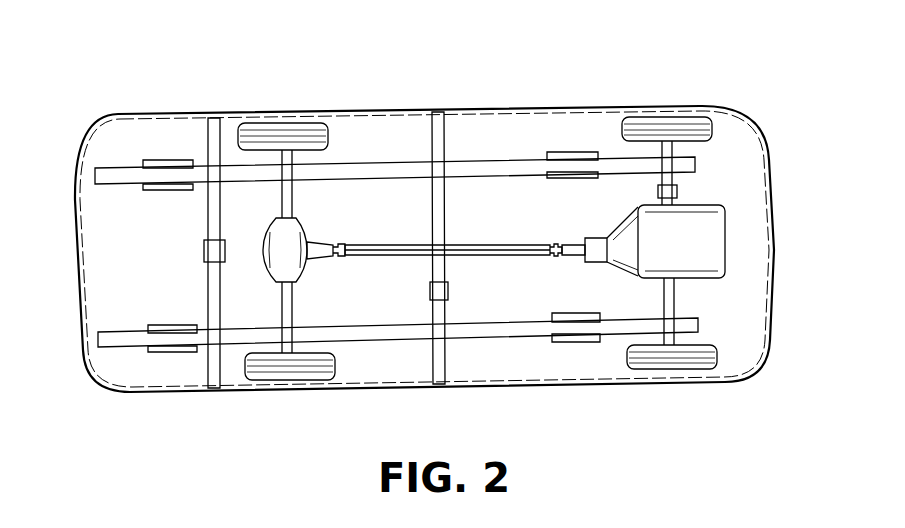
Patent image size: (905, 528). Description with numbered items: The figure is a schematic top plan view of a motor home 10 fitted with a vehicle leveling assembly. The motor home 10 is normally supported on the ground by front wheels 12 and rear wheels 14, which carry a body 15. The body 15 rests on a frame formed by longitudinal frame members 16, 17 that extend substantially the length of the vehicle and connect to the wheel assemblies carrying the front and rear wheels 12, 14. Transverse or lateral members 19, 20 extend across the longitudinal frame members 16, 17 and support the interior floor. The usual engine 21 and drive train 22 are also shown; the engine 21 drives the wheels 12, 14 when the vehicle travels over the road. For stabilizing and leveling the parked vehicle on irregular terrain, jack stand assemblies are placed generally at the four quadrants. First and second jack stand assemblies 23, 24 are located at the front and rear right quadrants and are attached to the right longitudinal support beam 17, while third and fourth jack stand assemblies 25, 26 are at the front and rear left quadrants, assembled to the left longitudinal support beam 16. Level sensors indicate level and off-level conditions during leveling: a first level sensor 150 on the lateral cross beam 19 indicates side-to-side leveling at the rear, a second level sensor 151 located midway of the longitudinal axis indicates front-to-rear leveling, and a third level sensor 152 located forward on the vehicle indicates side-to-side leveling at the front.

The motor home 10 is at (628, 62).
The front wheels 12 is at (690, 125).
The rear wheels 14 is at (282, 132).
The body 15 is at (396, 241).
The left longitudinal frame member 16 is at (482, 162).
The right longitudinal frame member 17 is at (490, 330).
The lateral cross beam 19 is at (213, 135).
The transverse member 20 is at (436, 152).
The engine 21 is at (707, 253).
The drive train 22 is at (493, 256).
The first jack stand assembly 23 is at (570, 342).
The second jack stand assembly 24 is at (175, 352).
The third jack stand assembly 25 is at (575, 150).
The fourth jack stand assembly 26 is at (150, 162).
The first level sensor 150 is at (204, 250).
The second level sensor 151 is at (430, 290).
The third level sensor 152 is at (677, 192).